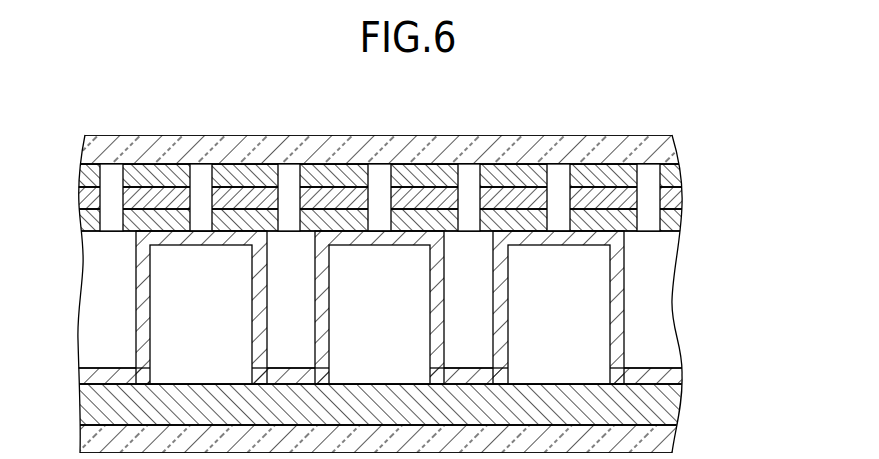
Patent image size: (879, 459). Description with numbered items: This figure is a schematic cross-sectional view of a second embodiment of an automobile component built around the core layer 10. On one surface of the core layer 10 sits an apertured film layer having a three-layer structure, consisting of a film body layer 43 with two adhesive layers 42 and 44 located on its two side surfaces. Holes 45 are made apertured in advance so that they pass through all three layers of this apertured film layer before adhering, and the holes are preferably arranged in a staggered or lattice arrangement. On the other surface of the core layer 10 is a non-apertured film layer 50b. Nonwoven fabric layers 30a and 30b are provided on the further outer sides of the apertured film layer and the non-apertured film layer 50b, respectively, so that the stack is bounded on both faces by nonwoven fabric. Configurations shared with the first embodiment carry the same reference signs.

The core layer 10 is at (380, 307).
The nonwoven fabric layer 30a is at (380, 149).
The nonwoven fabric layer 30b is at (380, 439).
The adhesive layer 42 is at (380, 175).
The film body layer 43 is at (380, 198).
The adhesive layer 44 is at (380, 220).
The holes 45 is at (380, 197).
The non-apertured film layer 50b is at (380, 404).